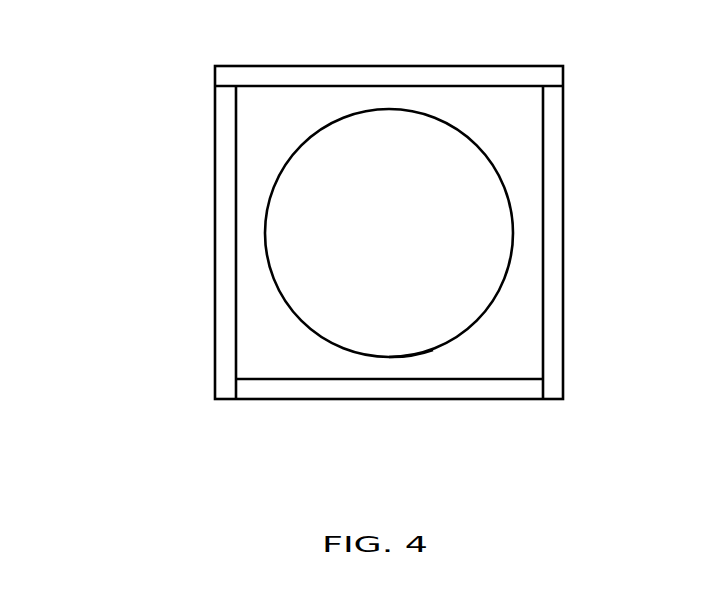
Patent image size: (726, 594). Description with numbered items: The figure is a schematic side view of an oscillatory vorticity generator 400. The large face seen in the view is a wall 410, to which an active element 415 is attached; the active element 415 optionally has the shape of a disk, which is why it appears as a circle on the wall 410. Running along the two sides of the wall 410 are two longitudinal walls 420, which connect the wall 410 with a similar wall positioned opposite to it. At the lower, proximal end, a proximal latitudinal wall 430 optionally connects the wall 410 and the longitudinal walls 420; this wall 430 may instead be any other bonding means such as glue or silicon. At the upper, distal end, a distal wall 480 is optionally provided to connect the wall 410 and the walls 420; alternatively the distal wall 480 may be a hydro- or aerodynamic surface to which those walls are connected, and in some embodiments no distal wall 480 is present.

The oscillatory vorticity generator 400 is at (131, 58).
The distal wall 480 is at (519, 65).
The longitudinal walls 420 is at (214, 232).
The proximal latitudinal wall 430 is at (261, 393).
The wall 410 is at (513, 157).
The active element 415 is at (433, 350).